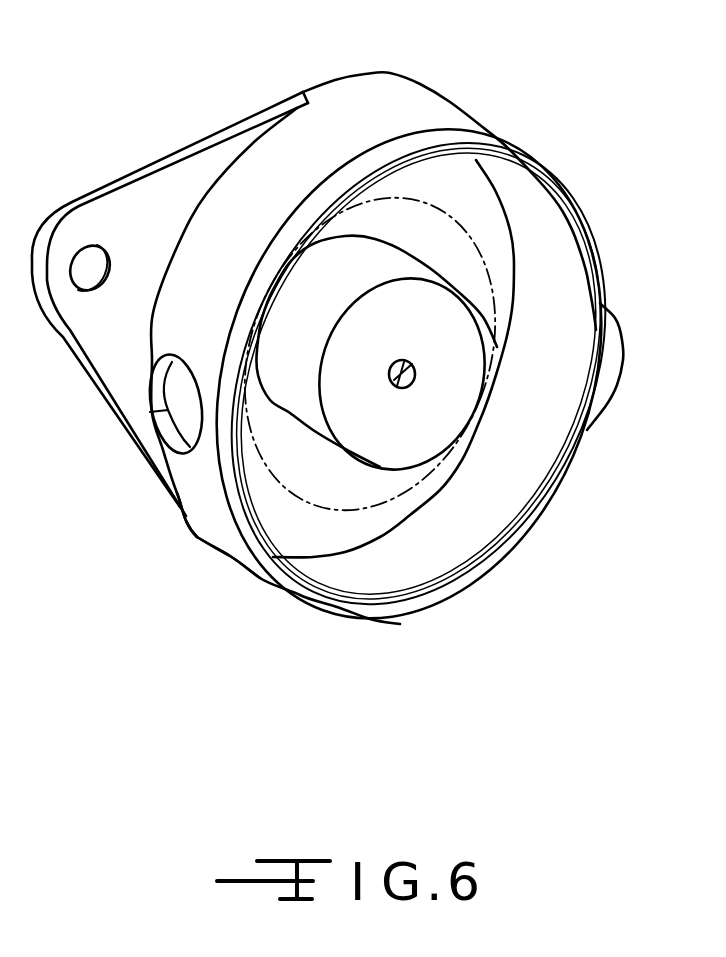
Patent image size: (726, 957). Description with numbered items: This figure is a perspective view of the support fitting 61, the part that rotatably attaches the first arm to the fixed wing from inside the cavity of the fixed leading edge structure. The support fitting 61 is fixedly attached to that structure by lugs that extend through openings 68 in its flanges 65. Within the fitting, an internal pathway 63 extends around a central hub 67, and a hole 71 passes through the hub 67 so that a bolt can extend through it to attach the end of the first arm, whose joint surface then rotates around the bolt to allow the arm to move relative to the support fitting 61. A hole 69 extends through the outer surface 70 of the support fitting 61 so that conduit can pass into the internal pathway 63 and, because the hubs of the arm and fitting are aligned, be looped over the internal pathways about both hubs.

The support fitting 61 is at (426, 110).
The internal pathway 63 is at (307, 507).
The flanges 65 is at (107, 350).
The hub 67 is at (440, 357).
The openings 68 is at (82, 266).
The hole 69 is at (152, 413).
The outer surface 70 is at (200, 505).
The hole 71 is at (406, 385).